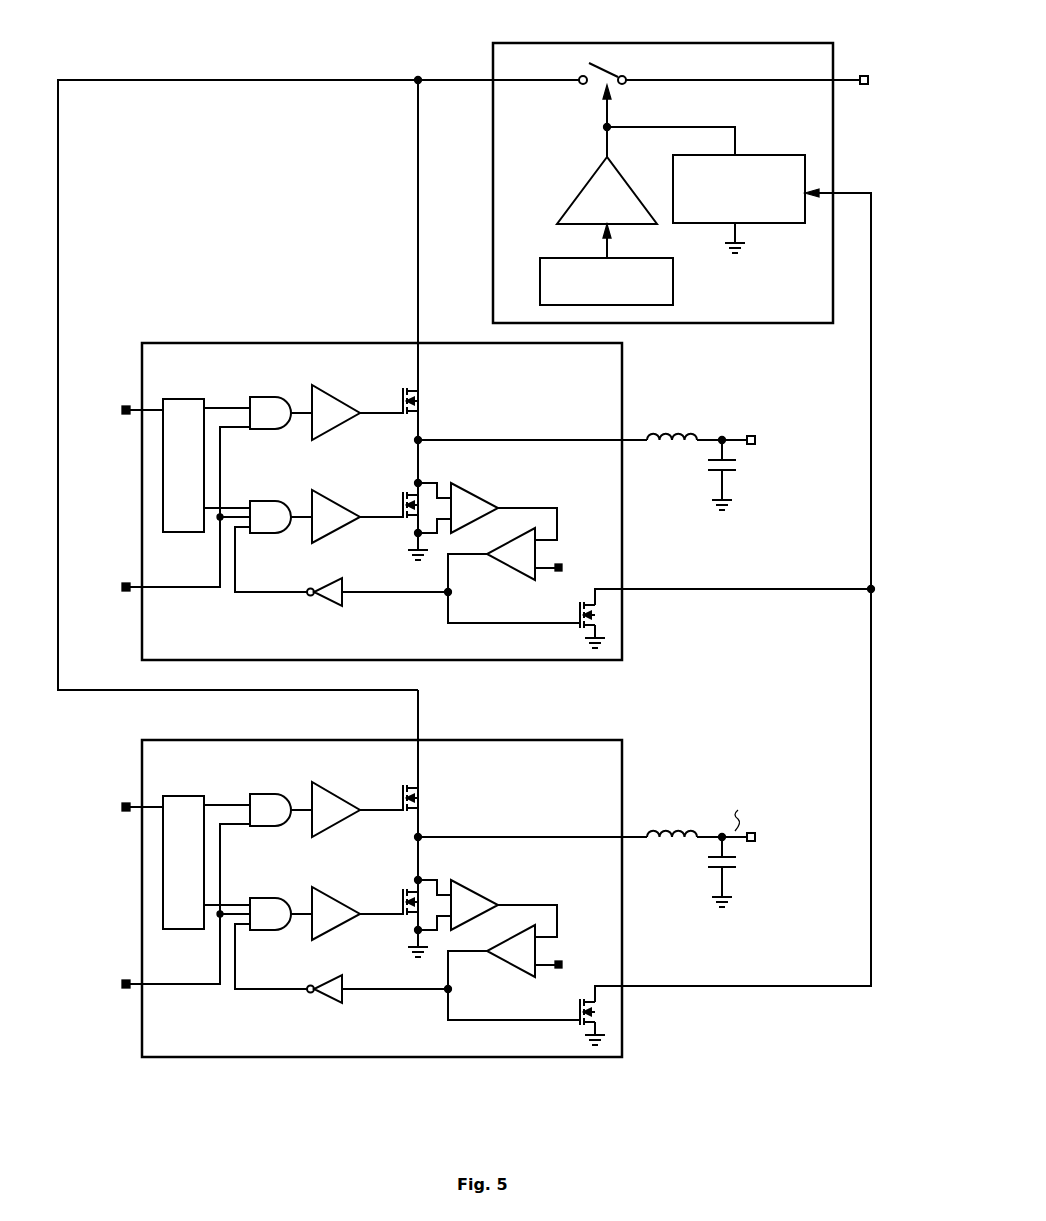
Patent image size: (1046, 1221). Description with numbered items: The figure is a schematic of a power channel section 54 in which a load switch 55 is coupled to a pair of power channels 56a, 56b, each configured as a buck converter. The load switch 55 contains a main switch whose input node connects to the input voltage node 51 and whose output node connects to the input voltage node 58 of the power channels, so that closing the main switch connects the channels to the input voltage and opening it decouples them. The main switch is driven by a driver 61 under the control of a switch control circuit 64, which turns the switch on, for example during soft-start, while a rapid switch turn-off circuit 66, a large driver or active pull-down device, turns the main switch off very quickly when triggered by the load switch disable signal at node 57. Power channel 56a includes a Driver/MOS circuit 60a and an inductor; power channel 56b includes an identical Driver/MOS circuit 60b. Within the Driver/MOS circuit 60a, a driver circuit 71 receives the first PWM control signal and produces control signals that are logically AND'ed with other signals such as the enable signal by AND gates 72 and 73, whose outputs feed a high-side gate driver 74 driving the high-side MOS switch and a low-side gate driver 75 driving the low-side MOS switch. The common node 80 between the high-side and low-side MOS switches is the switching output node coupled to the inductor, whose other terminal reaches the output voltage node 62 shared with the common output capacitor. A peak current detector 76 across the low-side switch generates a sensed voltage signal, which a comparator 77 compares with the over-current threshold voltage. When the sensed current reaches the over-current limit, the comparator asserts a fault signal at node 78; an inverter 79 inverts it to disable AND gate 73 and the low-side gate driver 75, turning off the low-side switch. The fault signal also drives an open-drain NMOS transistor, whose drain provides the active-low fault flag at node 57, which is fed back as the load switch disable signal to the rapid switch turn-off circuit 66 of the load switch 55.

The power channel section 54 is at (240, 361).
The load switch 55 is at (801, 43).
The input voltage node 51 is at (851, 85).
The input voltage node of the power channels 58 is at (461, 79).
The driver 61 is at (578, 192).
The switch control circuit 64 is at (676, 287).
The rapid switch turn-off circuit 66 is at (769, 155).
The load switch disable signal node 57 is at (871, 393).
The power channel 56a is at (180, 294).
The power channel 56b is at (142, 724).
The Driver/MOS circuit 60a is at (322, 343).
The Driver/MOS circuit 60b is at (382, 883).
The driver circuit 71 is at (184, 399).
The AND gate 72 is at (281, 413).
The AND gate 73 is at (281, 517).
The high-side gate driver 74 is at (343, 378).
The low-side gate driver 75 is at (343, 483).
The peak current detector 76 is at (470, 490).
The comparator 77 is at (506, 571).
The fault signal node 78 is at (392, 598).
The inverter 79 is at (330, 608).
The common node 80 is at (540, 442).
The output voltage node 62 is at (735, 434).